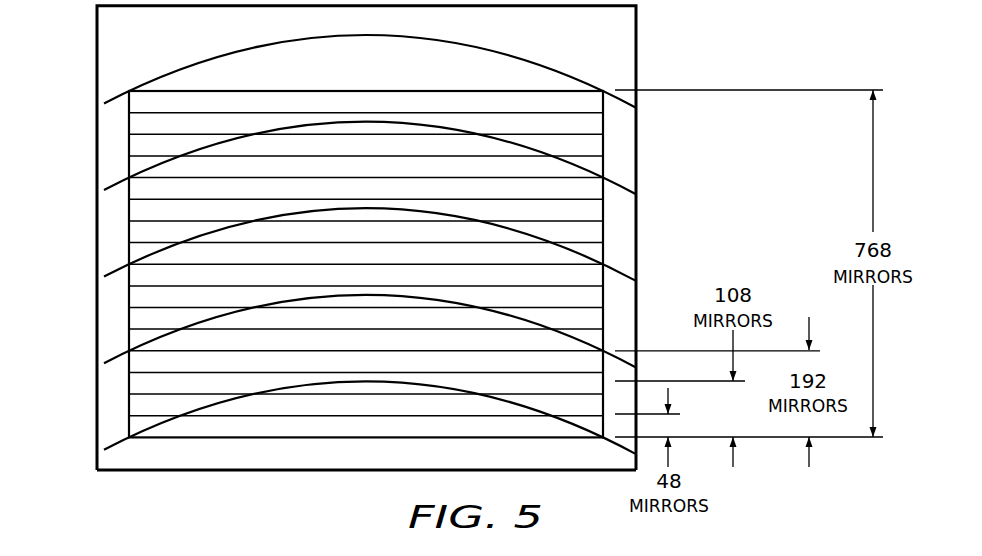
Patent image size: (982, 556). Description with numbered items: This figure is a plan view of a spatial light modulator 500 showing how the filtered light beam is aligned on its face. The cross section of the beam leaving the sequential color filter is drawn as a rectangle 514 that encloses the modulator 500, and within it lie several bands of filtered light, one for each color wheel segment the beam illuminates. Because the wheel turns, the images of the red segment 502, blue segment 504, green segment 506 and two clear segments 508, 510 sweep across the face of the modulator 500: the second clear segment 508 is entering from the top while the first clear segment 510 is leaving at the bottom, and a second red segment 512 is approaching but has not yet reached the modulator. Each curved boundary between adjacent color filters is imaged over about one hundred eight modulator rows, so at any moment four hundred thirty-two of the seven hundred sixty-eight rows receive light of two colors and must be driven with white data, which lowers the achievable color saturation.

The spatial light modulator 500 is at (603, 145).
The red segment 502 is at (100, 410).
The blue segment 504 is at (100, 324).
The green segment 506 is at (100, 238).
The second clear segment 508 is at (100, 153).
The first clear segment 510 is at (223, 466).
The second red segment 512 is at (100, 60).
The rectangle 514 is at (637, 48).